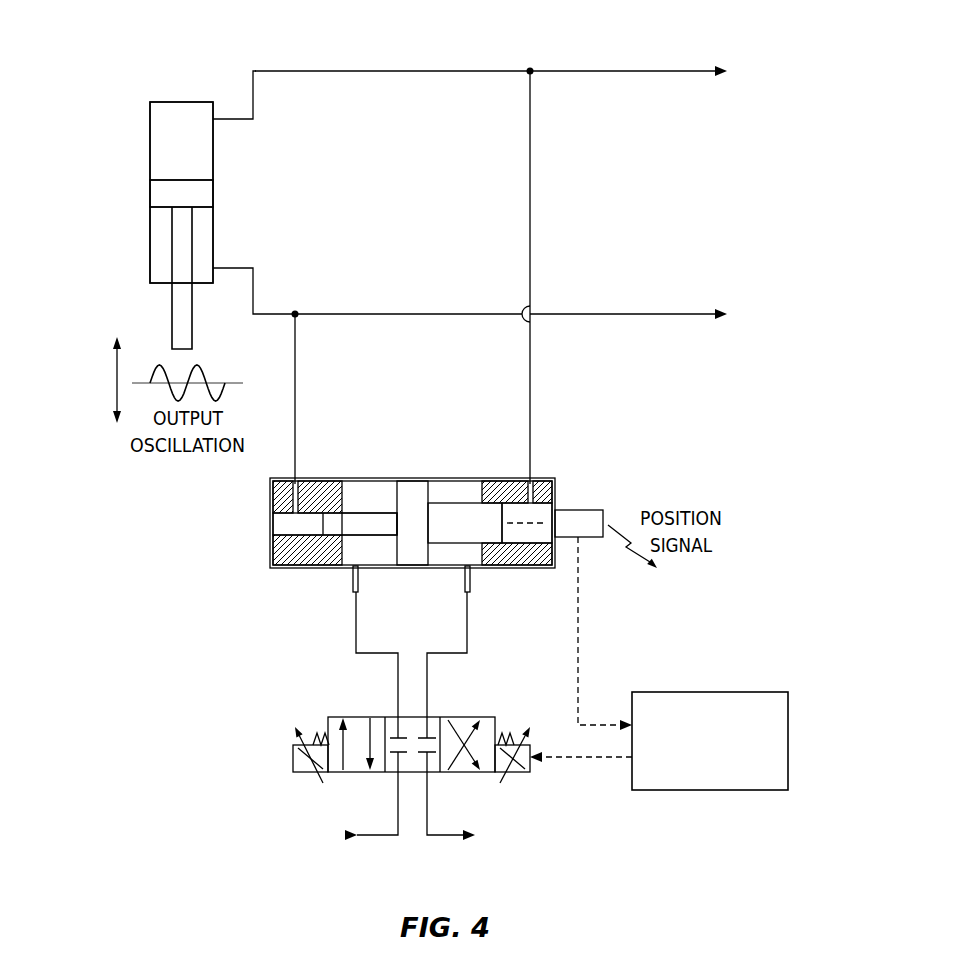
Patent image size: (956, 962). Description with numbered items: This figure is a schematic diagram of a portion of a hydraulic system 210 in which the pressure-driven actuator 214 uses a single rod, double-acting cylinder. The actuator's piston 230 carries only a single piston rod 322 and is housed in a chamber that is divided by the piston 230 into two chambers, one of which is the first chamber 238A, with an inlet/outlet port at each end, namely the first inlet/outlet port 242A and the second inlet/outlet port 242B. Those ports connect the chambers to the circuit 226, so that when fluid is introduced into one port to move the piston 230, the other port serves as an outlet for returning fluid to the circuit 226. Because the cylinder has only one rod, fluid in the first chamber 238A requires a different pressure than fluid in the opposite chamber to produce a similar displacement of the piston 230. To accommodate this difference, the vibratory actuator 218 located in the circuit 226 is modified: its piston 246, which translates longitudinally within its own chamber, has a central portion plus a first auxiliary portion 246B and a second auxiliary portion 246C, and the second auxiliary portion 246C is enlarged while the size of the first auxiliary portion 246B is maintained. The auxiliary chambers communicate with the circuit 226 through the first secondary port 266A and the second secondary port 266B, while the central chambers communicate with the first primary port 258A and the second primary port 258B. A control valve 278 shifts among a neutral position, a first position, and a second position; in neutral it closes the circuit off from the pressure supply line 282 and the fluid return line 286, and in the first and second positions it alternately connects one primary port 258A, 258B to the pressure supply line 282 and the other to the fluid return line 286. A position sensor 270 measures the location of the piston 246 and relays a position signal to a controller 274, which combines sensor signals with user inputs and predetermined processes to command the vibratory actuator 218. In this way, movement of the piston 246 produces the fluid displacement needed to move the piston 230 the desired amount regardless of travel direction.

The hydraulic system 210 is at (121, 75).
The pressure-driven actuator 214 is at (138, 165).
The first chamber 238A is at (202, 143).
The piston 230 is at (201, 193).
The piston rod 322 is at (180, 316).
The first inlet/outlet port 242A is at (218, 117).
The second inlet/outlet port 242B is at (222, 269).
The circuit 226 is at (442, 70).
The first secondary port 266A is at (297, 470).
The second secondary port 266B is at (540, 470).
The vibratory actuator 218 is at (243, 554).
The piston 246 is at (413, 515).
The first auxiliary portion 246B is at (374, 525).
The second auxiliary portion 246C is at (448, 523).
The position sensor 270 is at (580, 508).
The first primary port 258A is at (350, 575).
The second primary port 258B is at (475, 575).
The controller 274 is at (708, 692).
The control valve 278 is at (268, 748).
The pressure supply line 282 is at (378, 838).
The fluid return line 286 is at (443, 838).